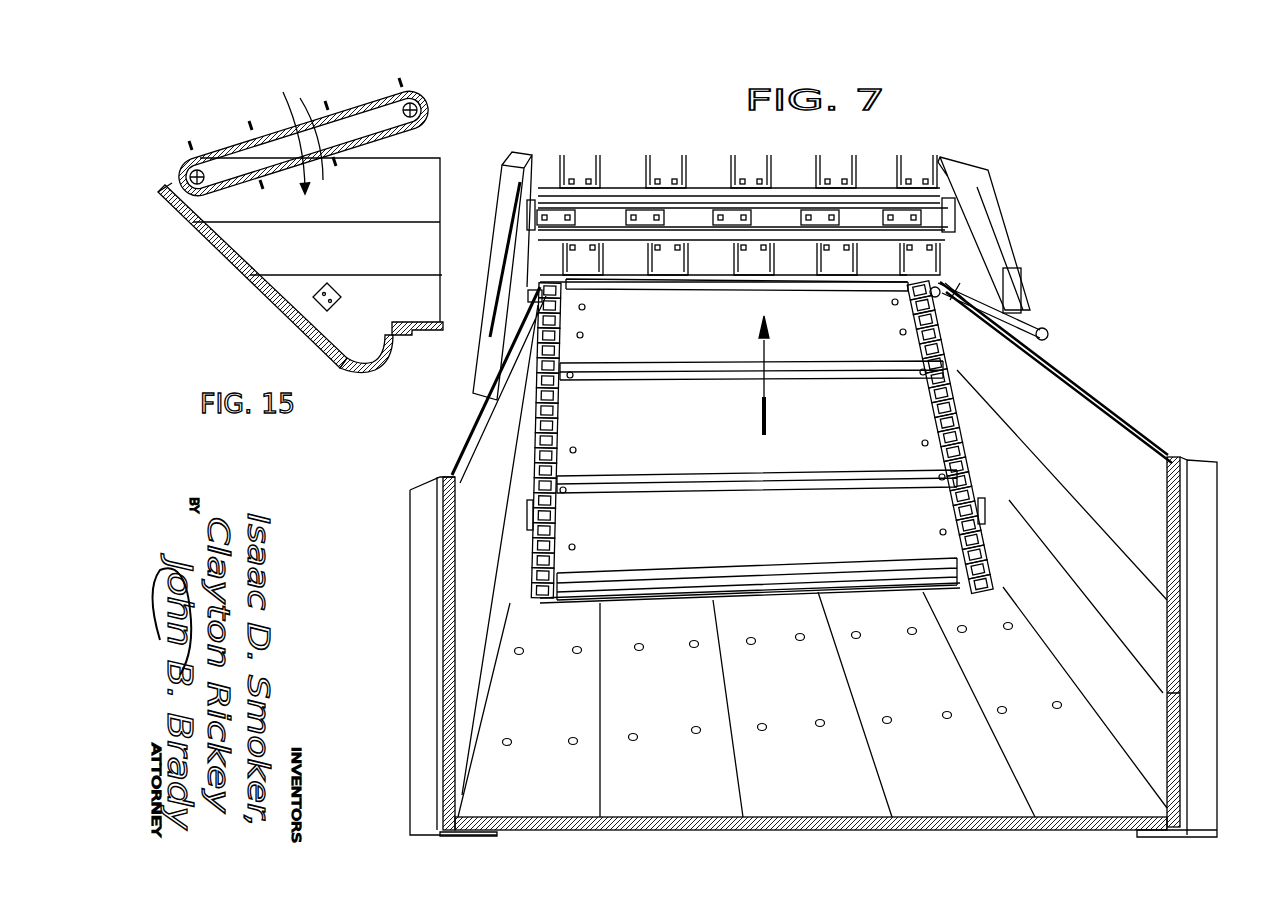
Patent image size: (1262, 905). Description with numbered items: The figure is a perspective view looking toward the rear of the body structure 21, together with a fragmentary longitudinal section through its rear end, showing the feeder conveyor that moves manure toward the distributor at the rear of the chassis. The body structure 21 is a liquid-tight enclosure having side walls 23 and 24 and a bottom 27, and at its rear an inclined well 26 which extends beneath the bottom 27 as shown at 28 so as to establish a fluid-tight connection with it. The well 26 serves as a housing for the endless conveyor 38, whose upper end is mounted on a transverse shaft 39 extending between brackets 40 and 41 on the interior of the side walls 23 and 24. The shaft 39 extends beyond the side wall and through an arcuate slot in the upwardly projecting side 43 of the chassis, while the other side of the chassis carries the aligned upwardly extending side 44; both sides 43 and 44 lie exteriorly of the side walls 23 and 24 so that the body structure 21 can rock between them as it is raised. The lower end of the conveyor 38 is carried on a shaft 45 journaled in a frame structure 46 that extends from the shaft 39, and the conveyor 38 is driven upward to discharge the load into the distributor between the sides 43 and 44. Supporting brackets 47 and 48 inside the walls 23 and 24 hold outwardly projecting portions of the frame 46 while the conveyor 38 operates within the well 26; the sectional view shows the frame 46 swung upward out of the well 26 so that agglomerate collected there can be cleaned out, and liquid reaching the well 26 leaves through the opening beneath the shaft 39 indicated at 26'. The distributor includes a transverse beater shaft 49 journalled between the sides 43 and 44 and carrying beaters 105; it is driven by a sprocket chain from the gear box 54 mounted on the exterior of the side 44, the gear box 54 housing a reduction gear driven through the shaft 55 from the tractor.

In FIG. 15, the body structure 21 is at (425, 160).
In FIG. 7, the side wall 23 is at (1085, 415).
In FIG. 15, the side wall 23 is at (428, 205).
In FIG. 7, the side wall 24 is at (490, 405).
In FIG. 7, the inclined well 26 is at (727, 439).
In FIG. 15, the inclined well 26 is at (252, 276).
In FIG. 15, the opening beneath shaft 26' is at (174, 225).
In FIG. 7, the bottom 27 is at (830, 782).
In FIG. 15, the bottom 27 is at (433, 320).
In FIG. 15, the well extension beneath bottom 28 is at (395, 346).
In FIG. 7, the endless conveyor 38 is at (557, 413).
In FIG. 15, the endless conveyor 38 is at (238, 140).
In FIG. 7, the transverse shaft 39 is at (963, 287).
In FIG. 15, the transverse shaft 39 is at (195, 172).
In FIG. 7, the bracket 40 is at (942, 332).
In FIG. 7, the bracket 41 is at (527, 338).
In FIG. 7, the upwardly projecting side of chassis 43 is at (521, 160).
In FIG. 7, the upwardly extending aligned side of chassis 44 is at (963, 175).
In FIG. 15, the shaft 45 is at (420, 105).
In FIG. 7, the frame structure 46 is at (800, 421).
In FIG. 15, the frame structure 46 is at (350, 105).
In FIG. 7, the supporting bracket 47 is at (987, 512).
In FIG. 15, the supporting bracket 47 is at (337, 292).
In FIG. 7, the supporting bracket 48 is at (527, 508).
In FIG. 7, the transverse beater shaft 49 is at (955, 213).
In FIG. 7, the gear box 54 is at (1013, 293).
In FIG. 7, the shaft 55 is at (1040, 337).
In FIG. 7, the beaters 105 is at (856, 168).